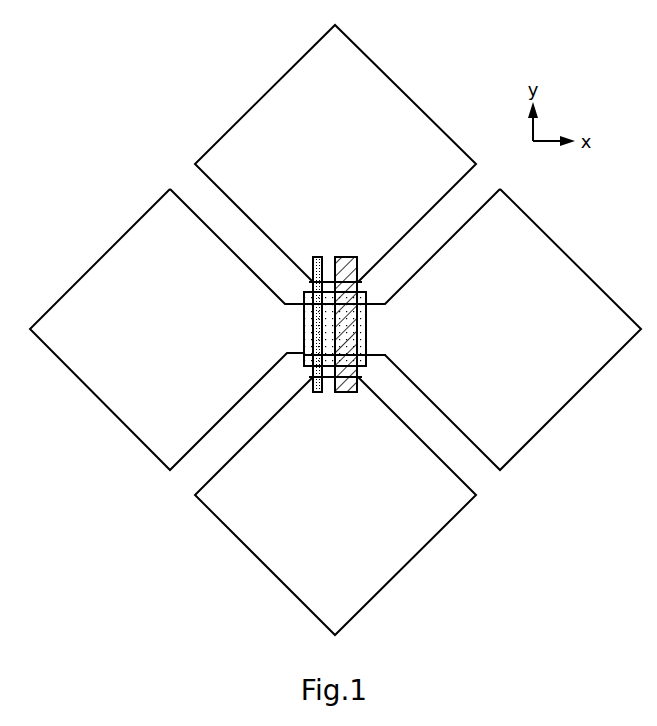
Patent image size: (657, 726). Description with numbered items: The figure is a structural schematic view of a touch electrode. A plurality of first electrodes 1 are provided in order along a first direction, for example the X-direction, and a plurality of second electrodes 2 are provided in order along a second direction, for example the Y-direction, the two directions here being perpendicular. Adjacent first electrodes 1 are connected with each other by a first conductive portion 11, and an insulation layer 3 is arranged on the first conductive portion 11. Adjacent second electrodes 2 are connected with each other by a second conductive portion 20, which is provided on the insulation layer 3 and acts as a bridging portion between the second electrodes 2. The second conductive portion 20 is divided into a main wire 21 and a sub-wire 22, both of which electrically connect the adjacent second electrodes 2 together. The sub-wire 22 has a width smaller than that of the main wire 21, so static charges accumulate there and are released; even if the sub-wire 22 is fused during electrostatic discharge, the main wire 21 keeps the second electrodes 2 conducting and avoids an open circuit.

The first electrode 1 is at (335, 329).
The second electrode 2 is at (335, 330).
The insulation layer 3 is at (364, 366).
The first conductive portion 11 is at (372, 302).
The second conductive portion 20 is at (281, 324).
The main wire 21 is at (350, 320).
The sub-wire 22 is at (315, 335).